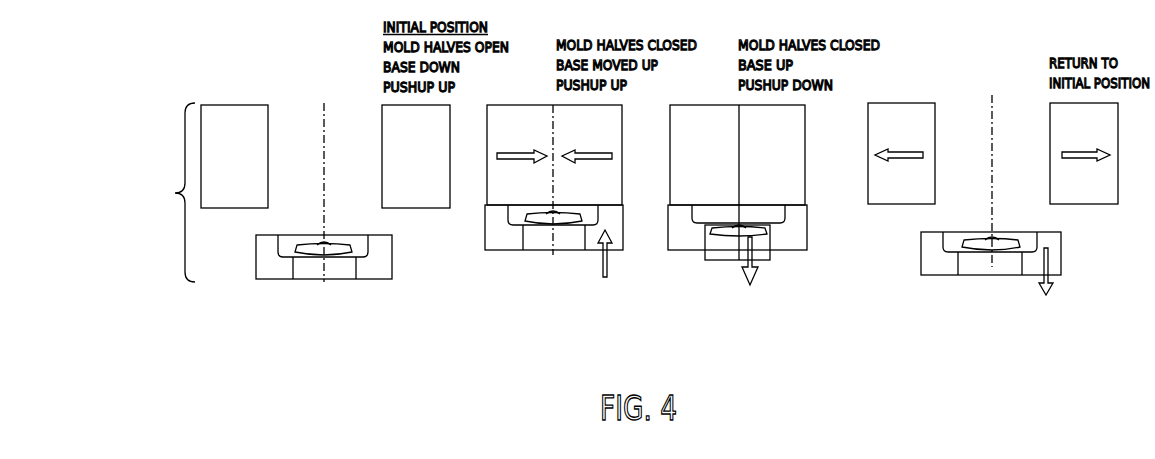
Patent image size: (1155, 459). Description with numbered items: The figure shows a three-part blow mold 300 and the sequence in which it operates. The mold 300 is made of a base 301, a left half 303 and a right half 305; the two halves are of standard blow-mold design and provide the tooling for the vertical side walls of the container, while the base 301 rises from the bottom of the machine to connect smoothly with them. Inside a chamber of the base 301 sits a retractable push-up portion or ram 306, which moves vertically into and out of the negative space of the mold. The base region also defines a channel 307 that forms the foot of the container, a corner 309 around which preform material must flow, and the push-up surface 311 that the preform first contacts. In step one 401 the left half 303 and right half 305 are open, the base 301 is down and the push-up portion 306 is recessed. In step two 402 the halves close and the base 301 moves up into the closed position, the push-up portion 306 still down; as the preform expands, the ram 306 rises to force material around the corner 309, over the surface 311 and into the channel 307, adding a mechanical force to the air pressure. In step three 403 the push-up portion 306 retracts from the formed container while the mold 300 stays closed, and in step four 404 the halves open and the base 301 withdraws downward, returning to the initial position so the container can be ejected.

The blow mold 300 is at (172, 192).
The base 301 is at (392, 268).
The left half 303 is at (235, 103).
The right half 305 is at (420, 208).
The push-up portion 306 is at (337, 279).
The channel 307 is at (361, 247).
The corner 309 is at (348, 252).
The push-up surface 311 is at (318, 242).
The step 1 401 is at (347, 337).
The step 2 402 is at (577, 335).
The step 3 403 is at (763, 335).
The step 4 404 is at (1012, 335).